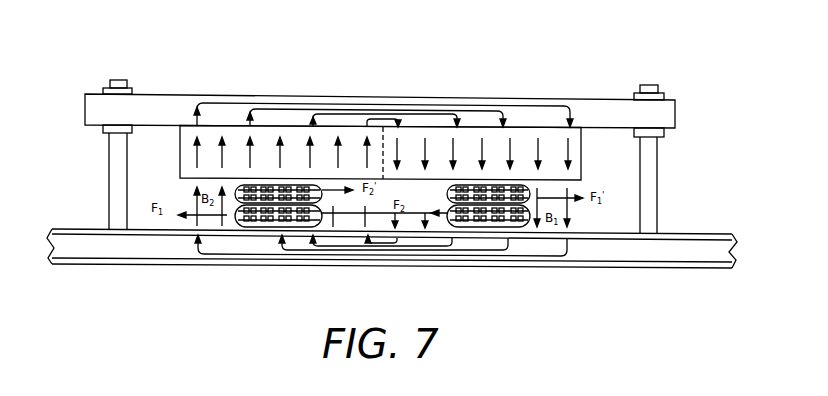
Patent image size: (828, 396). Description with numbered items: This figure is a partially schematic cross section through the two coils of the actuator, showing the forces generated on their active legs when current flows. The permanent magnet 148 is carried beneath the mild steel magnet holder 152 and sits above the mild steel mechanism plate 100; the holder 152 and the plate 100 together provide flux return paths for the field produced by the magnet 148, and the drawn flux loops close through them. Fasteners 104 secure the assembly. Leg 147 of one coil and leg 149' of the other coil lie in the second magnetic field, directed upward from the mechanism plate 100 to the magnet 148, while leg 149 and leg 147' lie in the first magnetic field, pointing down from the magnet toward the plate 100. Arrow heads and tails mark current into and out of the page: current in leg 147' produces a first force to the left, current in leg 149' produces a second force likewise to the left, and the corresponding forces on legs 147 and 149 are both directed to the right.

The mechanism plate 100 is at (675, 256).
The bolt 104 is at (109, 176).
The magnet 148 is at (488, 137).
The magnet holder 152 is at (600, 108).
The leg of coil 147 is at (272, 253).
The leg of coil 147' is at (532, 183).
The leg of coil 149 is at (497, 250).
The leg of coil 149' is at (232, 188).